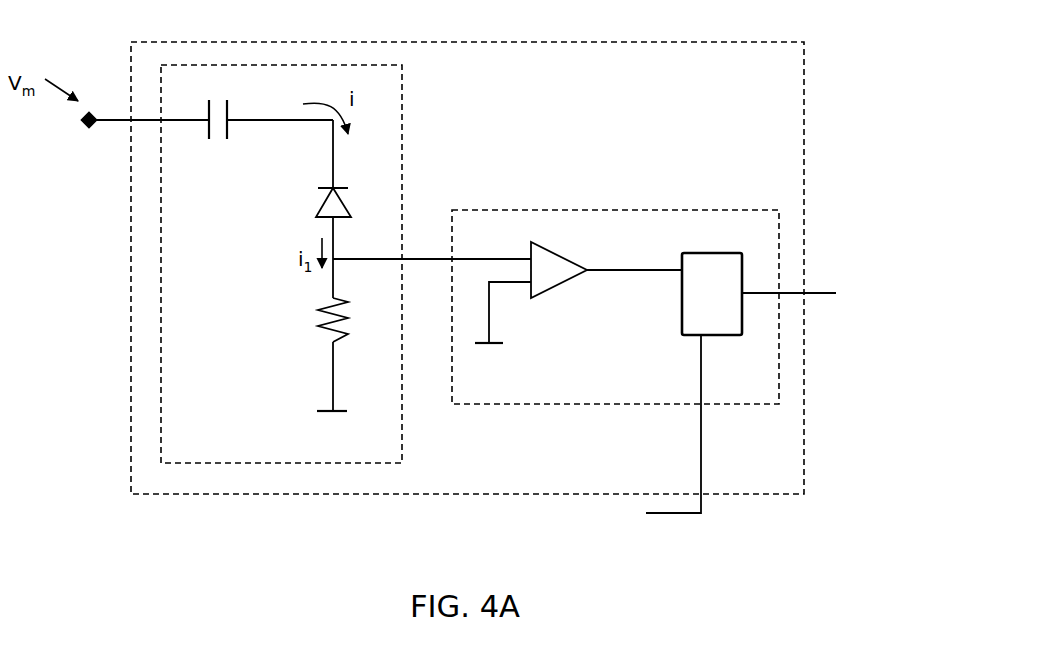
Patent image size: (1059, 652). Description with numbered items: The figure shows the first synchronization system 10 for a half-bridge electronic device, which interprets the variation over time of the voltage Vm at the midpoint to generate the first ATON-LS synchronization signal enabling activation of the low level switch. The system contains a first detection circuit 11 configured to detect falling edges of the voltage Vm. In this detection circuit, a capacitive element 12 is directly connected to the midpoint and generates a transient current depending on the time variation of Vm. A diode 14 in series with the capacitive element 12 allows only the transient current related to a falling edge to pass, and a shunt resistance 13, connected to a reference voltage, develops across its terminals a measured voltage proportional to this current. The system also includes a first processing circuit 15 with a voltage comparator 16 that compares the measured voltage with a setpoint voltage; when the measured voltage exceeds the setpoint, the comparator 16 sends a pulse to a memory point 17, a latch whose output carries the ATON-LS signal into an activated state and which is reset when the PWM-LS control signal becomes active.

The first synchronization system 10 is at (464, 38).
The first detection circuit 11 is at (156, 270).
The capacitive element 12 is at (210, 146).
The shunt resistance 13 is at (312, 326).
The diode 14 is at (320, 208).
The first processing circuit 15 is at (550, 206).
The voltage comparator 16 is at (560, 286).
The memory point 17 is at (680, 295).